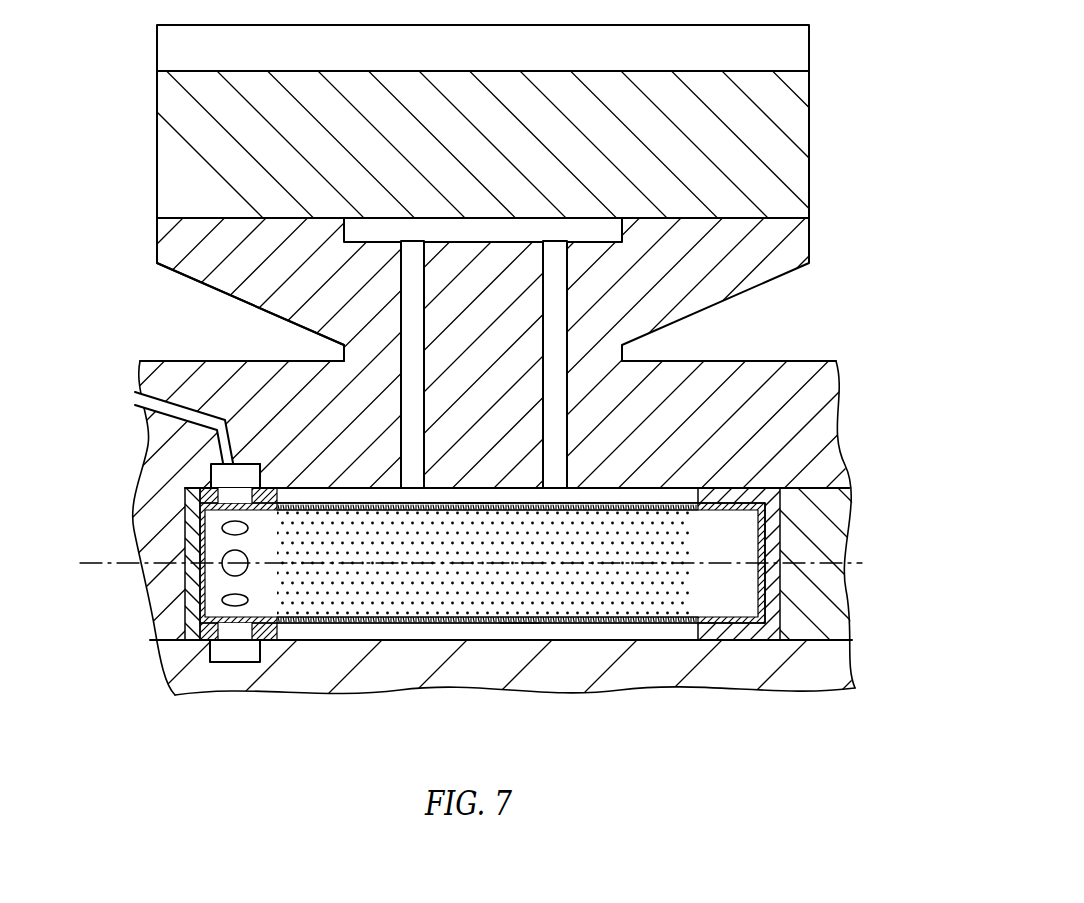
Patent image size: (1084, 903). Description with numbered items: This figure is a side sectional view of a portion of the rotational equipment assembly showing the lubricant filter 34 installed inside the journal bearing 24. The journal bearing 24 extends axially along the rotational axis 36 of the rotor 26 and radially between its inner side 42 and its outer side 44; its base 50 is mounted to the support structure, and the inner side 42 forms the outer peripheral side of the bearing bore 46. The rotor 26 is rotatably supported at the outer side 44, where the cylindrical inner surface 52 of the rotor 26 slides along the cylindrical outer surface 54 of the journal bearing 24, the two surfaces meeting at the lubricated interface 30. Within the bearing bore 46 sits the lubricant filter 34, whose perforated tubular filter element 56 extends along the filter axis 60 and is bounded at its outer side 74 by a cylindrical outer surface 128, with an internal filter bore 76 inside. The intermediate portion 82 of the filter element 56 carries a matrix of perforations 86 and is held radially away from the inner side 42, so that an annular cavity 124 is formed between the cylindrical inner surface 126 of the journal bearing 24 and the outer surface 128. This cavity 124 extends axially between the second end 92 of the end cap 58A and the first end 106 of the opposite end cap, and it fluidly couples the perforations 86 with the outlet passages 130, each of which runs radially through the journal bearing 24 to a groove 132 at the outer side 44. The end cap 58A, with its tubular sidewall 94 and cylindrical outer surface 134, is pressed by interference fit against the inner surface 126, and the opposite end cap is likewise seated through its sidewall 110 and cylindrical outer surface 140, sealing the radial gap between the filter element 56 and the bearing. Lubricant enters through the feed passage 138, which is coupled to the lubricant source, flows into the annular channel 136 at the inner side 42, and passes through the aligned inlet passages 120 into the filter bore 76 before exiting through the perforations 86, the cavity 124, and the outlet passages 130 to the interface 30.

The journal bearing 24 is at (818, 243).
The rotor 26 is at (818, 140).
The interface 30 is at (157, 218).
The lubricant filter 34 is at (735, 481).
The rotational axis 36 is at (455, 609).
The inner side 42 is at (482, 564).
The outer side 44 is at (247, 187).
The bearing bore 46 is at (487, 450).
The base 50 is at (840, 383).
The inner surface 52 is at (187, 219).
The outer surface 54 is at (193, 217).
The filter element 56 is at (613, 640).
The end cap 58A is at (782, 546).
The filter axis 60 is at (93, 568).
The outer side 74 is at (487, 577).
The filter bore 76 is at (641, 552).
The intermediate portion 82 is at (450, 640).
The perforations 86 is at (488, 505).
The second end 92 is at (280, 497).
The sidewall 94 is at (203, 640).
The first end 106 is at (683, 497).
The sidewall 110 is at (738, 637).
The inlet passages 120 is at (212, 507).
The cavity 124 is at (570, 495).
The inner surface 126 is at (330, 497).
The outer surface 128 is at (362, 500).
The outlet passages 130 is at (553, 330).
The groove 132 is at (468, 228).
The outer surface 134 is at (205, 472).
The channel 136 is at (242, 475).
The feed passage 138 is at (145, 400).
The outer surface 140 is at (783, 470).